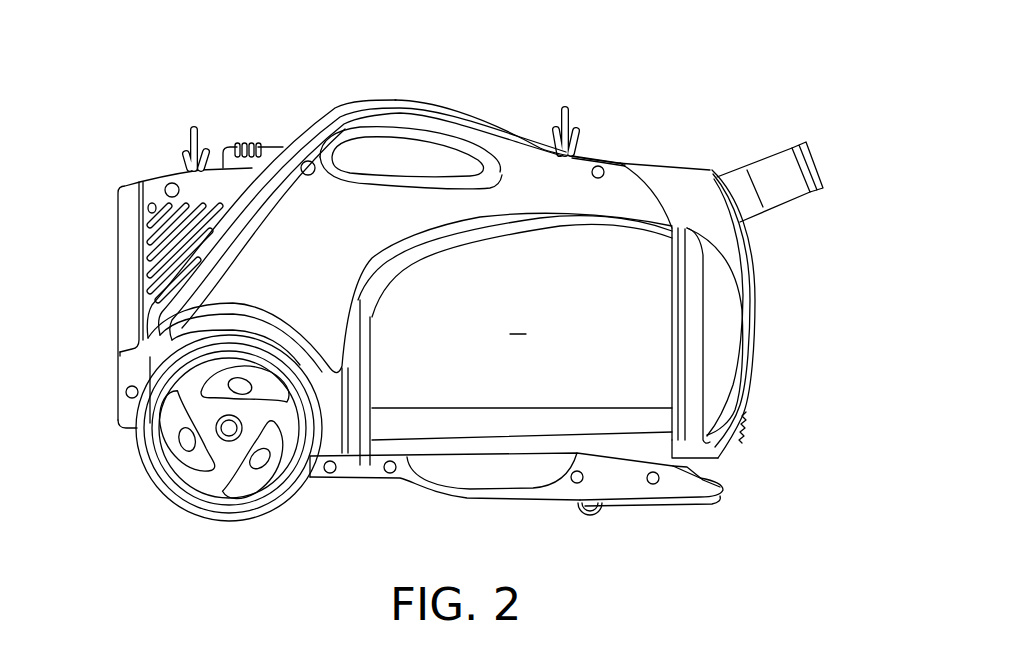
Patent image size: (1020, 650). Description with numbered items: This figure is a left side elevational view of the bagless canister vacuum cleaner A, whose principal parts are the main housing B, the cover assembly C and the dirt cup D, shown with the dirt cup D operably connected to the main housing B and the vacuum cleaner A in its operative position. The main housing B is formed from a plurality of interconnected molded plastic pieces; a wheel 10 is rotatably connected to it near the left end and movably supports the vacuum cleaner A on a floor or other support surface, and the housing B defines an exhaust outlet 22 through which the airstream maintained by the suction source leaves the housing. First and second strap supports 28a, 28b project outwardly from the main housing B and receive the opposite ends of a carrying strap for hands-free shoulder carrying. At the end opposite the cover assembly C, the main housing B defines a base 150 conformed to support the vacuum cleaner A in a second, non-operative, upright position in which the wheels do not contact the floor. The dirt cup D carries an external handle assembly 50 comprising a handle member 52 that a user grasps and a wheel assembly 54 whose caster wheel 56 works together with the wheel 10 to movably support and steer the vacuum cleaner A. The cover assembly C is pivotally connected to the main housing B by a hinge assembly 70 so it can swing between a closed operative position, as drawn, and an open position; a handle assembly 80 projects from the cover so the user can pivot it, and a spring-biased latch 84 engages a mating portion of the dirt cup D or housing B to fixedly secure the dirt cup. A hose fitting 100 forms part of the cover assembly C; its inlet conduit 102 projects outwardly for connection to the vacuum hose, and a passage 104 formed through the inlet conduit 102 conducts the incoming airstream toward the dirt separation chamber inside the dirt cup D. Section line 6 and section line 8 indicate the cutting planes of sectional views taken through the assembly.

The section line 6- 6 is at (157, 322).
The section line 8- 8 is at (205, 132).
The wheels 10 is at (155, 501).
The exhaust outlet 22 is at (158, 200).
The first strap support 28a is at (183, 126).
The second strap support 28b is at (572, 108).
The external handle assembly 50 is at (427, 507).
The handle member 52 is at (483, 478).
The wheel assembly 54 is at (657, 528).
The caster wheel 56 is at (597, 536).
The hinge assembly 70 is at (610, 147).
The handle assembly 80 is at (780, 350).
The latch 84 is at (742, 424).
The hose fitting 100 is at (722, 166).
The inlet conduit 102 is at (772, 144).
The passage 104 is at (815, 178).
The base 150 is at (110, 360).
The vacuum cleaner A is at (446, 84).
The main housing B is at (301, 220).
The cover assembly C is at (768, 375).
The dirt cup D is at (507, 340).